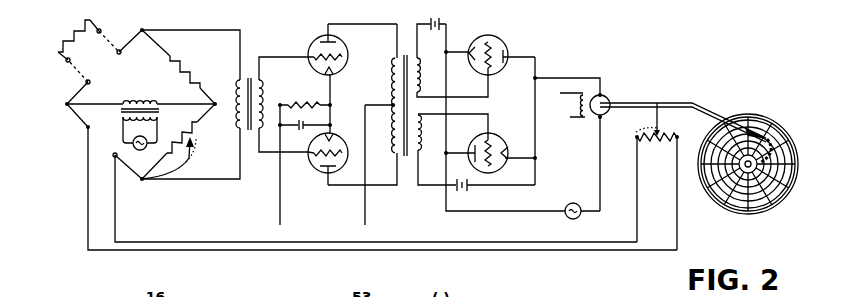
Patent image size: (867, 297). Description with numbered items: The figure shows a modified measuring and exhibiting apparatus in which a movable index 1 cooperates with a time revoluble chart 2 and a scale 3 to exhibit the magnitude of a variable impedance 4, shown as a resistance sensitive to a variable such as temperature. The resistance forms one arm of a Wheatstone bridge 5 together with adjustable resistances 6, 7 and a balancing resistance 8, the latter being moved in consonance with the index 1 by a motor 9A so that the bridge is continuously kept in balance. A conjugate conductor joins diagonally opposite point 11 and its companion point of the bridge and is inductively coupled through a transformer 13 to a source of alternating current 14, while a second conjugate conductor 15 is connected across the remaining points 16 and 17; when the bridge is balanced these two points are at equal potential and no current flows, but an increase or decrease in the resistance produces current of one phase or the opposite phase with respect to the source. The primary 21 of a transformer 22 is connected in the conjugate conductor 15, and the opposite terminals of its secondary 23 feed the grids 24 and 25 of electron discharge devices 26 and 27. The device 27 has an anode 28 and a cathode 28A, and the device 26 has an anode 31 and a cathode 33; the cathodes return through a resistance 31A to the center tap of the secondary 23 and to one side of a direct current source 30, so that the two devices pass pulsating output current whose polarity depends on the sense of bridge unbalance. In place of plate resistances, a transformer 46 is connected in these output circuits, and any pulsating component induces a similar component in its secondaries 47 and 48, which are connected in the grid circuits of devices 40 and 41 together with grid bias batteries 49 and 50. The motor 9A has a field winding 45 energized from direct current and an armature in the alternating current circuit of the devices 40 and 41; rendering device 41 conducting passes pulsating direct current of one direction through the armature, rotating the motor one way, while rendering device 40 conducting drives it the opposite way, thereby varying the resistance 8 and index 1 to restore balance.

The movable index 1 is at (711, 109).
The time revoluble chart 2 is at (771, 207).
The scale 3 is at (777, 133).
The variable impedance 4 is at (76, 29).
The Wheatstone bridge 5 is at (146, 84).
The adjustable resistance 6 is at (192, 68).
The adjustable resistance 7 is at (190, 127).
The balancing resistance 8 is at (656, 141).
The motor 9A is at (605, 96).
The bridge point 11 is at (66, 112).
The transformer 13 is at (121, 114).
The source of alternating current 14 is at (126, 146).
The second conjugate conductor 15 is at (240, 50).
The bridge point 16 is at (146, 30).
The bridge point 17 is at (143, 182).
The primary 21 is at (234, 118).
The transformer 22 is at (249, 134).
The secondary 23 is at (259, 83).
The grid 24 is at (338, 118).
The grid 25 is at (344, 50).
The electron discharge device 26 is at (343, 168).
The electron discharge device 27 is at (307, 50).
The anode 28 is at (325, 33).
The cathode 28A is at (349, 104).
The direct current source 30 is at (363, 211).
The anode 31 is at (317, 173).
The resistance 31A is at (318, 100).
The cathode 33 is at (341, 108).
The electron discharge device 40 is at (494, 134).
The electron discharge device 41 is at (508, 47).
The field winding 45 is at (590, 118).
The transformer 46 is at (403, 157).
The secondary 47 is at (421, 75).
The secondary 48 is at (421, 135).
The battery 49 is at (427, 20).
The battery 50 is at (478, 183).